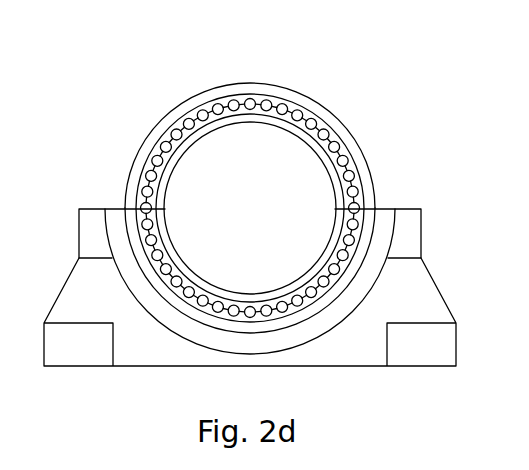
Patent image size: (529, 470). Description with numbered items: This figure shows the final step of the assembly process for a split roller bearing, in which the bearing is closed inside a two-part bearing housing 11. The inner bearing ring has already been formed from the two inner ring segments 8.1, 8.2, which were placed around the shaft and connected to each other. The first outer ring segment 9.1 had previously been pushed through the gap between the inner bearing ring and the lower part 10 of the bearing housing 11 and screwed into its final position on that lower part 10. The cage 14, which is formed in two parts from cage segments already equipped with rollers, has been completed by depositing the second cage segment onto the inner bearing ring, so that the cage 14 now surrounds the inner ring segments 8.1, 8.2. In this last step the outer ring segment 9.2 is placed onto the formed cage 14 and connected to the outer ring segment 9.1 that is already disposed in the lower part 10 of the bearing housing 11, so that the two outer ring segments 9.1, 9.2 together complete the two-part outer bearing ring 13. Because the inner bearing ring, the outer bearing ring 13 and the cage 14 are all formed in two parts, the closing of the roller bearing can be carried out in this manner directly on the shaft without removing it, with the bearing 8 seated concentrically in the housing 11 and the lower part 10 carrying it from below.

The rolling bearing 8 is at (277, 216).
The inner ring segment 8.1 is at (172, 117).
The inner ring segment 8.2 is at (349, 230).
The outer ring segment 9.1 is at (315, 318).
The outer ring segment 9.2 is at (315, 93).
The lower part 10 is at (413, 286).
The bearing housing 11 is at (70, 202).
The outer bearing ring 13 is at (249, 81).
The cage 14 is at (336, 135).